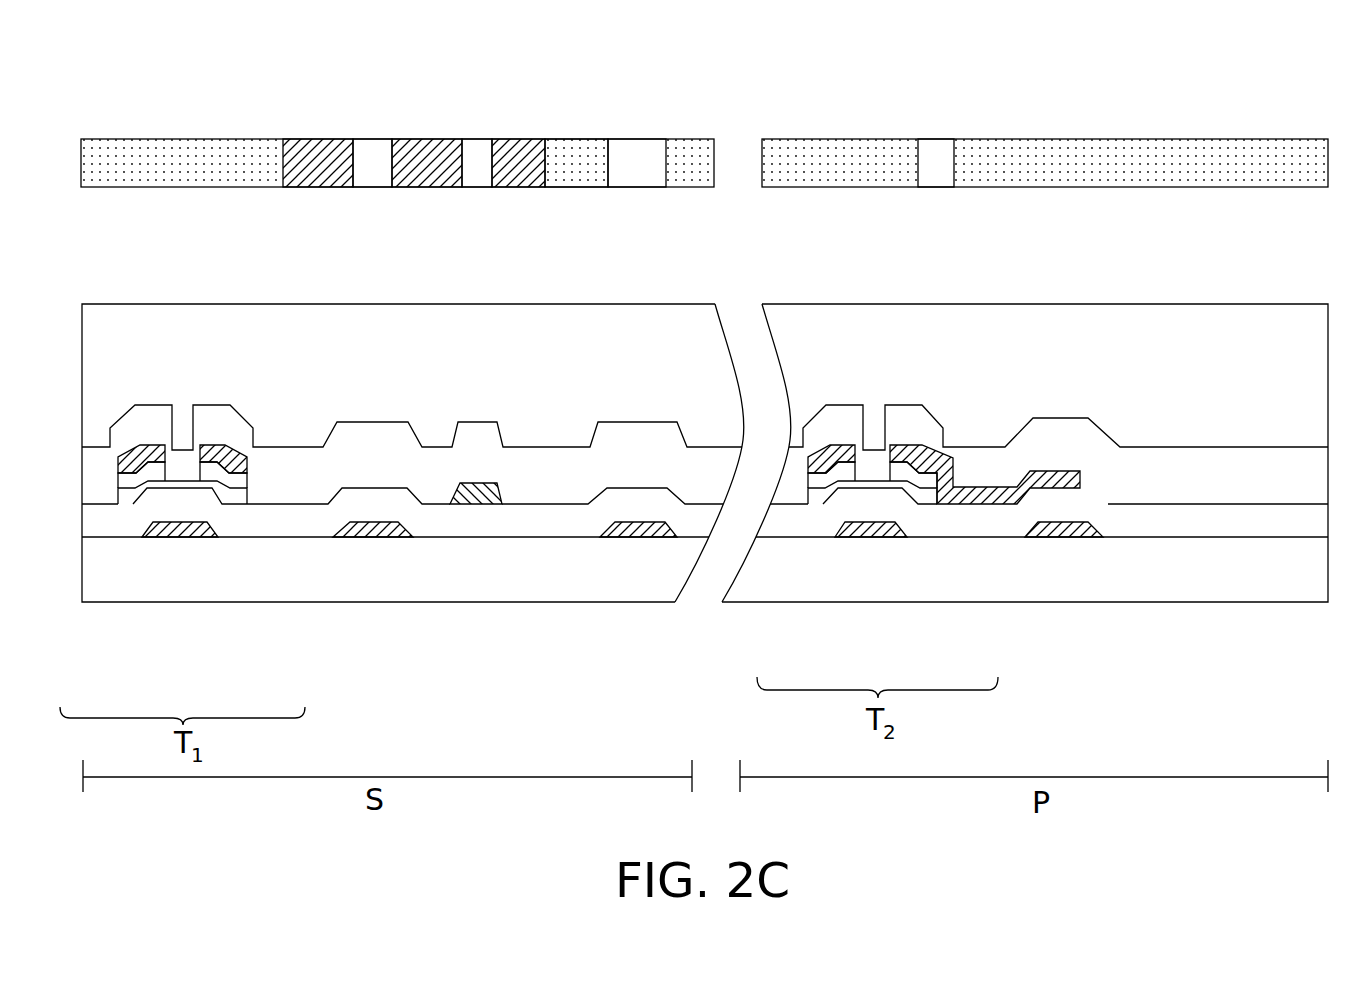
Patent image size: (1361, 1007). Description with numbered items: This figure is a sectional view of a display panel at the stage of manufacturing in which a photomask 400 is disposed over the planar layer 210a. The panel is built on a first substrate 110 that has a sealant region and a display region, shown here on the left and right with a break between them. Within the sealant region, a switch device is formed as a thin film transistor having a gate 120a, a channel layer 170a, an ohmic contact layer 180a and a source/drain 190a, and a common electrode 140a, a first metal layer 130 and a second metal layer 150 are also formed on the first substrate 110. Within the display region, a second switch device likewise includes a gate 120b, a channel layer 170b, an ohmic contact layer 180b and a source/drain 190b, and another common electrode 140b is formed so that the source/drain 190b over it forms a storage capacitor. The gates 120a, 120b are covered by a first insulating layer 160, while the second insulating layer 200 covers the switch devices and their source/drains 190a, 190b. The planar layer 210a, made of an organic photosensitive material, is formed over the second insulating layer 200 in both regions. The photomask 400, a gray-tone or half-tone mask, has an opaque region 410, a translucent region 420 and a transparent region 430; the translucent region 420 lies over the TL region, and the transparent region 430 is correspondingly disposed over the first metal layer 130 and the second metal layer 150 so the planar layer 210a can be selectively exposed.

The photomask 400 is at (124, 139).
The opaque region 410 is at (203, 150).
The translucent region 420 is at (318, 157).
The transparent region 430 is at (370, 173).
The planar layer 210a is at (173, 337).
The first insulating layer 160 is at (307, 527).
The second insulating layer 200 is at (438, 487).
The first substrate 110 is at (557, 568).
The first metal layer 130 is at (365, 535).
The second metal layer 150 is at (477, 494).
The common electrode 140a is at (637, 531).
The common electrode 140b is at (1065, 533).
The gate 120a is at (178, 531).
The ohmic contact layer 180a is at (218, 471).
The channel layer 170a is at (128, 499).
The source/drain 190a is at (238, 464).
The gate 120b is at (877, 524).
The ohmic contact layer 180b is at (923, 478).
The channel layer 170b is at (817, 500).
The source/drain 190b is at (963, 496).